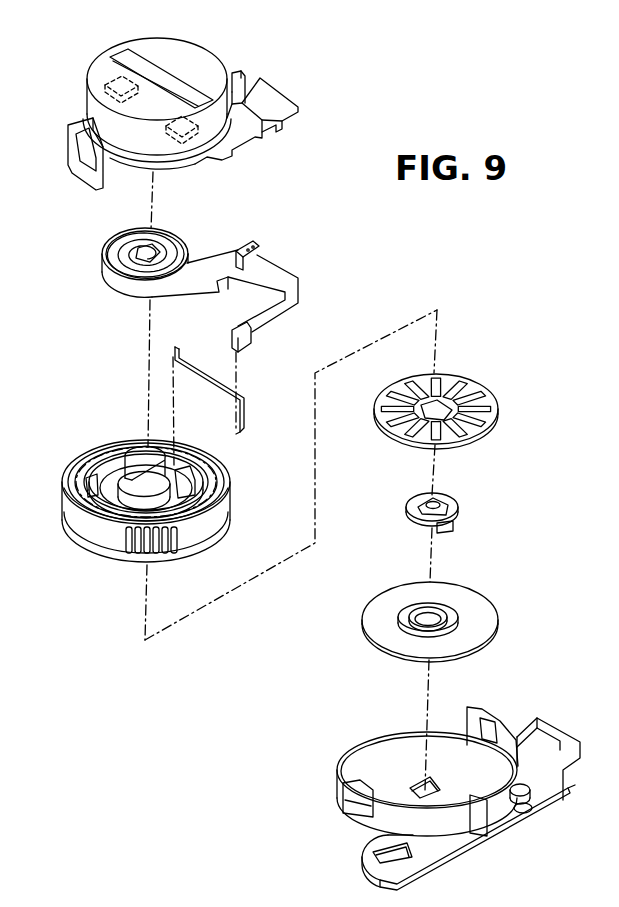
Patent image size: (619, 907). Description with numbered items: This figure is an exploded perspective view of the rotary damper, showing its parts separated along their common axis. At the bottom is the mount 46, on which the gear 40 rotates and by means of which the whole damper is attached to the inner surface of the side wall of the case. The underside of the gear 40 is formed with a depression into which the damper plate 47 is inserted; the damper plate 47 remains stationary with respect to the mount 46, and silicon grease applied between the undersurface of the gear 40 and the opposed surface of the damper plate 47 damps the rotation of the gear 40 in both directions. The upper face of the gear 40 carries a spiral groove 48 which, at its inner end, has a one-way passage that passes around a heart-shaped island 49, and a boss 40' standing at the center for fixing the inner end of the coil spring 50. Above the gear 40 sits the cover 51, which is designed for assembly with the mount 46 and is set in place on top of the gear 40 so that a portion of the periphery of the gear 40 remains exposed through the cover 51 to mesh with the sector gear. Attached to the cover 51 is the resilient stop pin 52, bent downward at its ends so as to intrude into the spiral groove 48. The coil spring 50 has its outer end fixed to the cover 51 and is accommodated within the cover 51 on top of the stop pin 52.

The cover 51 is at (90, 72).
The coil spring 50 is at (107, 262).
The resilient stop pin 52 is at (200, 358).
The gear 40 is at (134, 522).
The spiral groove 48 is at (95, 463).
The boss 40' is at (132, 423).
The heart-shaped island 49 is at (183, 476).
The damper plate 47 is at (472, 392).
The mount 46 is at (388, 748).